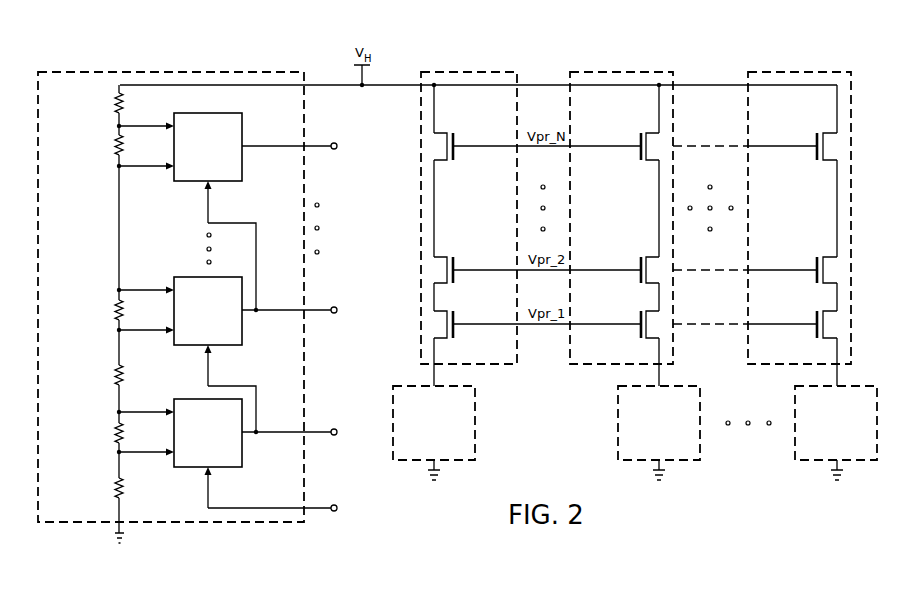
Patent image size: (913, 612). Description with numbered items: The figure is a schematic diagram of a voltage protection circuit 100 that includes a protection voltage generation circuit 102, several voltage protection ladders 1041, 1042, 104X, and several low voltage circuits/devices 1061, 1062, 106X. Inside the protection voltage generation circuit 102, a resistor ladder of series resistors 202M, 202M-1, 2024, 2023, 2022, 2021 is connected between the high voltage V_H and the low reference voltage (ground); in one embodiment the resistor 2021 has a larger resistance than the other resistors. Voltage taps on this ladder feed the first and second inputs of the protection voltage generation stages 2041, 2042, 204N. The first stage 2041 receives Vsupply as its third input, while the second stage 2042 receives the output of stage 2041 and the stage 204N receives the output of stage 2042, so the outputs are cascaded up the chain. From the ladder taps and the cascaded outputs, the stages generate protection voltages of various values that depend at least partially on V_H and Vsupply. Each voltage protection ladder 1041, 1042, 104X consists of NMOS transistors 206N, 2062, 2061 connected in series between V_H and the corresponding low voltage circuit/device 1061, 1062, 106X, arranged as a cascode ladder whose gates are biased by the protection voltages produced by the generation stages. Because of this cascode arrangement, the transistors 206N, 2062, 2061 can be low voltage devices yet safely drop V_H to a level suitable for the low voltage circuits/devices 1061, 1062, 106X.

The voltage protection circuit 100 is at (262, 31).
The protection voltage generation circuit 102 is at (168, 63).
The resistor 202M is at (116, 103).
The resistor 202M-1 is at (116, 143).
The resistor 2024 is at (116, 310).
The resistor 2023 is at (116, 373).
The resistor 2022 is at (116, 434).
The resistor 2021 is at (116, 490).
The protection voltage generation stage 204N is at (192, 182).
The protection voltage generation stage 2042 is at (192, 346).
The protection voltage generation stage 2041 is at (192, 468).
The voltage protection ladder 1041 is at (477, 63).
The voltage protection ladder 1042 is at (624, 63).
The voltage protection ladder 104X is at (801, 63).
The NMOS transistor 206N is at (455, 139).
The NMOS transistor 2062 is at (455, 261).
The NMOS transistor 2061 is at (455, 334).
The low voltage circuit/device 1061 is at (455, 462).
The low voltage circuit/device 1062 is at (680, 462).
The low voltage circuit/device 106X is at (858, 462).